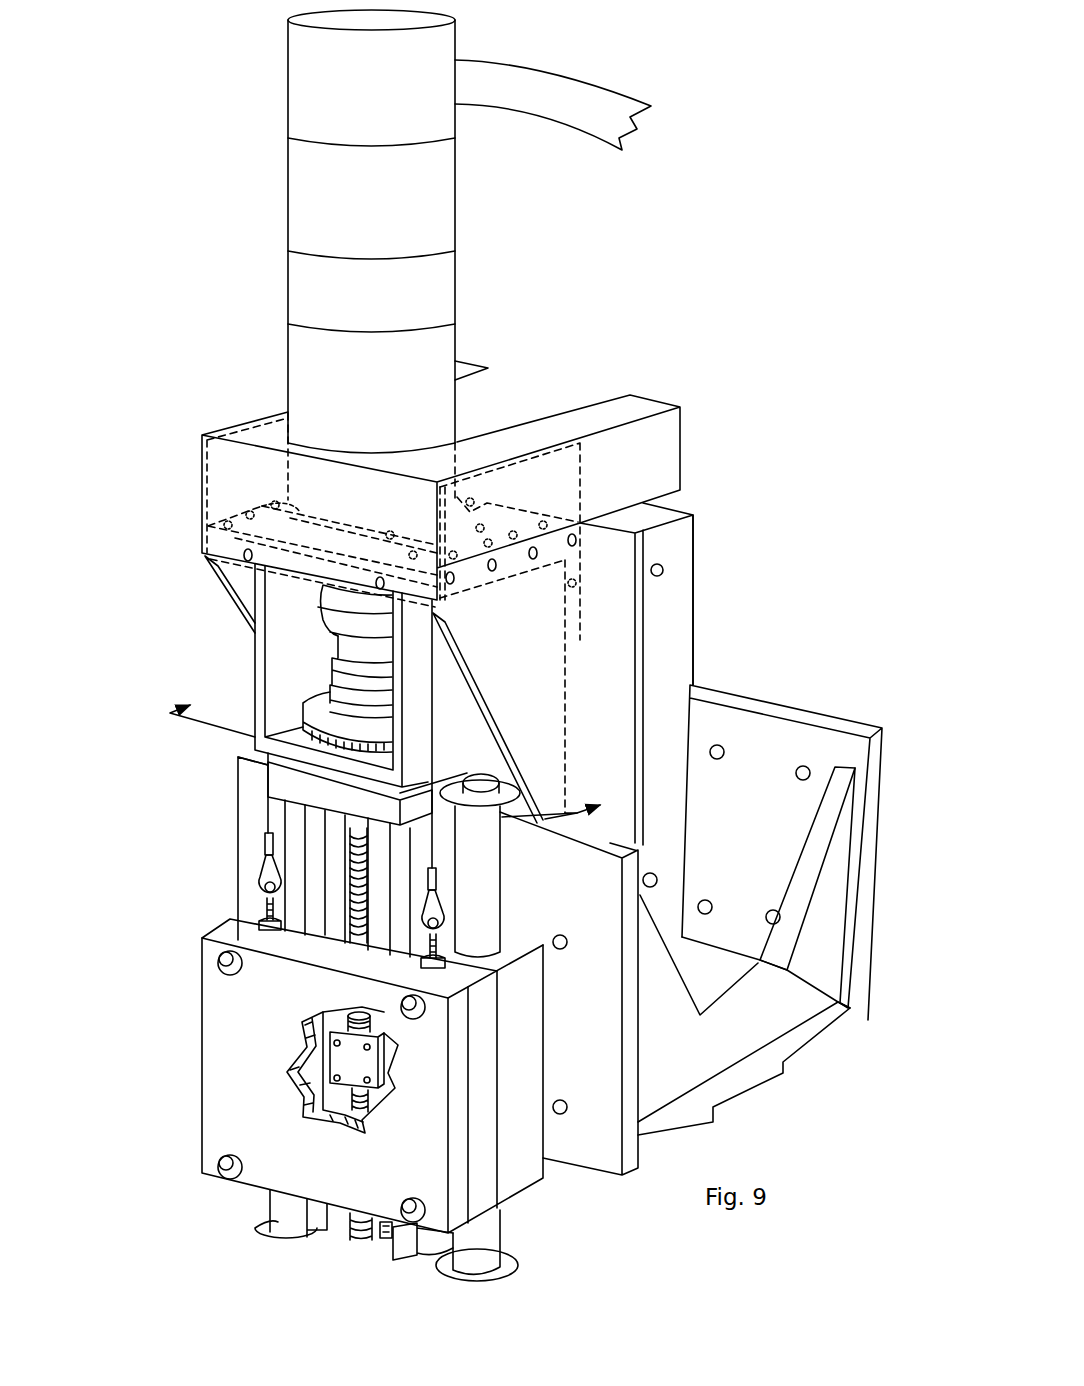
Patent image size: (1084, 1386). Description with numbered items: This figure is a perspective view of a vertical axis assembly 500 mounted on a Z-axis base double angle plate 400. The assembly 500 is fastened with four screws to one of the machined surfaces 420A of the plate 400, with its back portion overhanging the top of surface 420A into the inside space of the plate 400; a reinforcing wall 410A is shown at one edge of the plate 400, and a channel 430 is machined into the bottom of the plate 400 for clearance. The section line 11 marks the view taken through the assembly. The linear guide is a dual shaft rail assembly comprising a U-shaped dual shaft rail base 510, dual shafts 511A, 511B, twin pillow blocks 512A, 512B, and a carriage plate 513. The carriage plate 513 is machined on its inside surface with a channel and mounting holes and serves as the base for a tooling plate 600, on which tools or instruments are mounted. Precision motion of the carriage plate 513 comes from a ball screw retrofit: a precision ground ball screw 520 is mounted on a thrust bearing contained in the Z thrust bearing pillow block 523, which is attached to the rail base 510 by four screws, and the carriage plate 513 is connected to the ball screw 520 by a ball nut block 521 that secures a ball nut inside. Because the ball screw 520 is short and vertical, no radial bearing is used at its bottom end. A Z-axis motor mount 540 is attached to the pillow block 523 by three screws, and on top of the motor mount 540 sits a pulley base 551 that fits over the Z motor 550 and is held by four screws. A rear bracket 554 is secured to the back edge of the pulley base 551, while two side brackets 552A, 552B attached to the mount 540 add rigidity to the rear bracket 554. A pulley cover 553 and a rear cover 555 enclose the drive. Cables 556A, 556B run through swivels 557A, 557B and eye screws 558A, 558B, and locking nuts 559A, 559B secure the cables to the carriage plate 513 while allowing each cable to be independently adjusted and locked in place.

The vertical axis assembly 500 is at (722, 406).
The Z motor 550 is at (430, 360).
The pulley cover 553 is at (572, 425).
The pulley base 551 is at (245, 530).
The rear cover 555 is at (678, 542).
The rear bracket 554 is at (610, 600).
The side bracket 552A is at (232, 577).
The side bracket 552B is at (527, 665).
The Z-axis motor mount 540 is at (257, 655).
The section line 11 is at (396, 750).
The cable 556A is at (268, 800).
The cable 556B is at (432, 693).
The swivel 557A is at (268, 840).
The swivel 557B is at (436, 878).
The eye screw 558A is at (262, 880).
The eye screw 558B is at (445, 921).
The locking nut 559A is at (265, 914).
The locking nut 559B is at (448, 970).
The pillow block 512A is at (258, 905).
The pillow block 512B is at (513, 950).
The Z thrust bearing pillow block 523 is at (287, 778).
The ball screw 520 is at (357, 832).
The carriage plate 513 is at (238, 926).
The tooling plate 600 is at (240, 1100).
The ball nut block 521 is at (350, 1060).
The shaft 511A is at (283, 1208).
The shaft 511B is at (480, 1240).
The U-shaped dual shaft rail base 510 is at (337, 1225).
The Z-axis base double angle plate 400 is at (760, 752).
The reinforcing wall 410A is at (760, 1012).
The machined surface 420A is at (587, 1091).
The channel 430 is at (753, 1090).